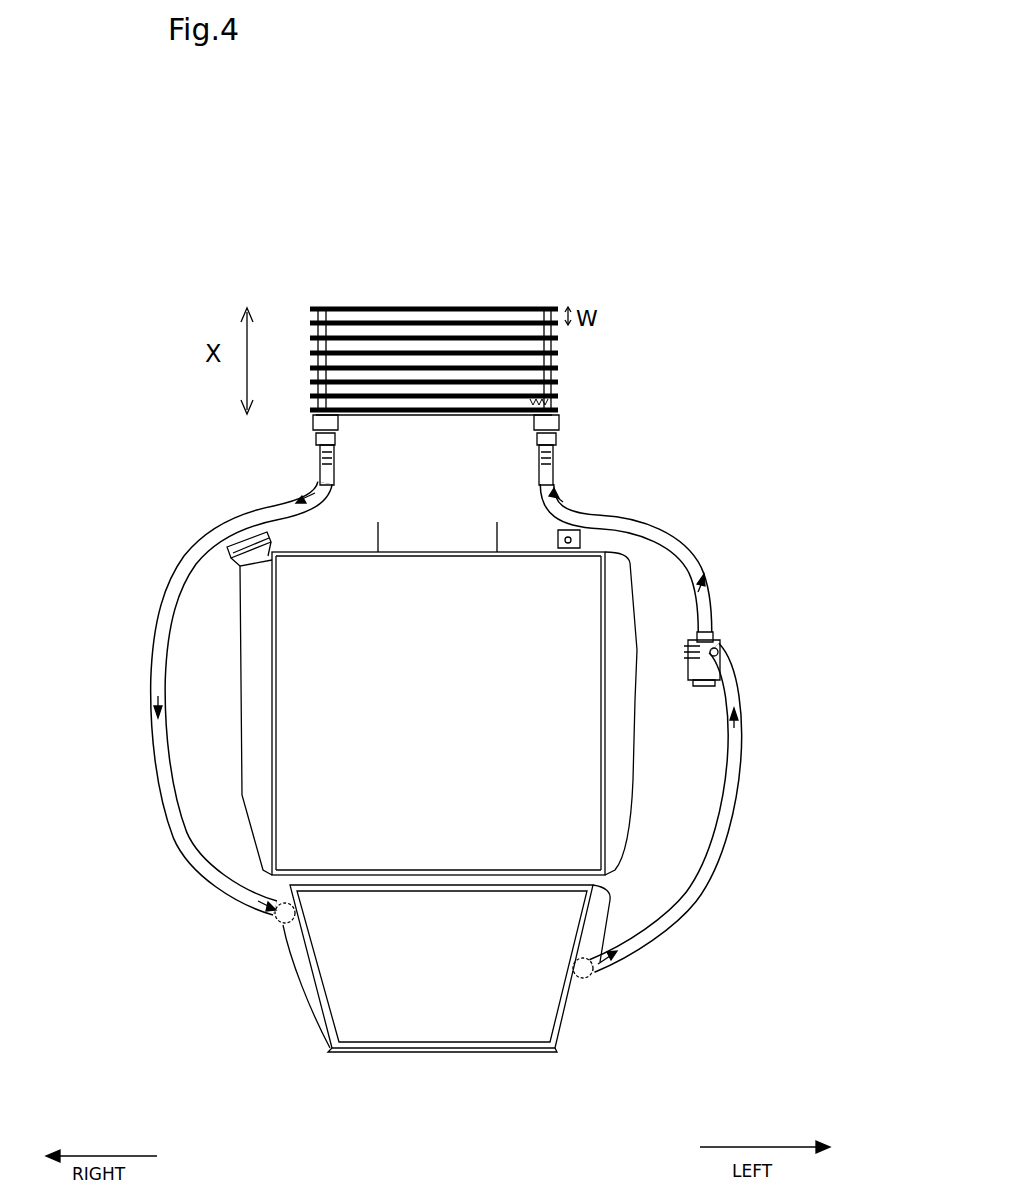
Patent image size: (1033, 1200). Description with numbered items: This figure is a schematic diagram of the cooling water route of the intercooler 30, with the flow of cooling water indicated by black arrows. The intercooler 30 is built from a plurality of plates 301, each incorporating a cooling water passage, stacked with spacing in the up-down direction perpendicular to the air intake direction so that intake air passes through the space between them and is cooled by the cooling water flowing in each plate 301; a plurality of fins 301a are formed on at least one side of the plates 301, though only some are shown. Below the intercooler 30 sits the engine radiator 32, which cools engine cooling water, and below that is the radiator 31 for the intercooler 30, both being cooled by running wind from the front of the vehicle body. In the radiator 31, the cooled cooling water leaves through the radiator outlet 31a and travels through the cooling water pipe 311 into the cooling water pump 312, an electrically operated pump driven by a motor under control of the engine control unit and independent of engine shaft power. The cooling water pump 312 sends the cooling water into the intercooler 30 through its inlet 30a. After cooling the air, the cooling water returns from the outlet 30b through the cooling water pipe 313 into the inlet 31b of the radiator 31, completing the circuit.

The intercooler 30 is at (518, 263).
The plates 301 is at (350, 404).
The fins 301a is at (627, 371).
The inlet 30a is at (545, 470).
The outlet 30b is at (318, 464).
The radiator 31 is at (570, 1000).
The radiator outlet 31a is at (593, 978).
The inlet 31b is at (280, 950).
The cooling water pipe 311 is at (732, 813).
The cooling water pump 312 is at (728, 663).
The cooling water pipe 313 is at (163, 793).
The engine radiator 32 is at (620, 778).